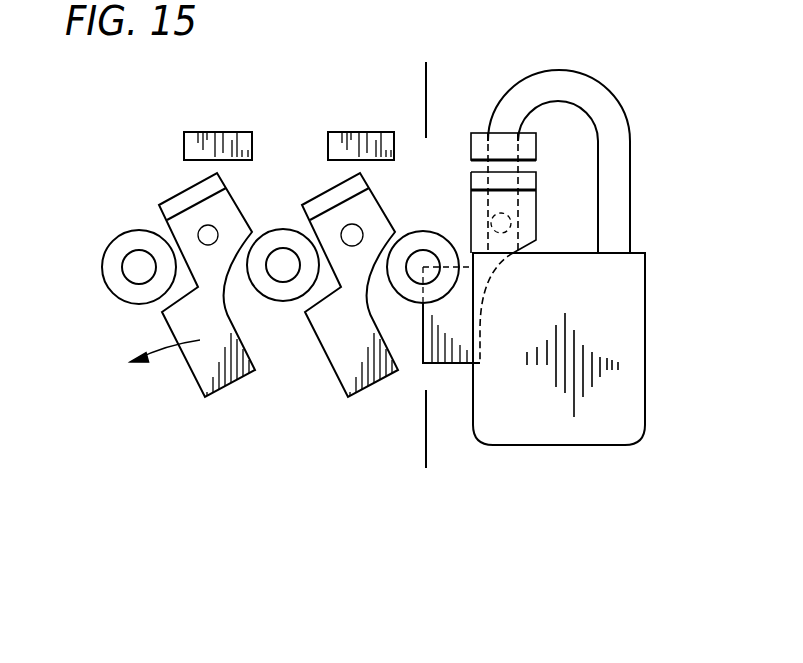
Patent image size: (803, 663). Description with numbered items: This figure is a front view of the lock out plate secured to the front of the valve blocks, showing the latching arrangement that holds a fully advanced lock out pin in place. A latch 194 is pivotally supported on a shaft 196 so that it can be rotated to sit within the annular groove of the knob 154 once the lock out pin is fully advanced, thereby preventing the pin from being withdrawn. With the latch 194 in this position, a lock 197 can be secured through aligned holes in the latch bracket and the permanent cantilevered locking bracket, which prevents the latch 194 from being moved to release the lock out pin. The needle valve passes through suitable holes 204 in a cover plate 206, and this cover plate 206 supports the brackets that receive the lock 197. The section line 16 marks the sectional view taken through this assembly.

The section line 16- 16 is at (408, 452).
The knob 154 is at (139, 267).
The latch 194 is at (202, 368).
The shaft 196 is at (210, 235).
The lock 197 is at (610, 303).
The holes 204 is at (103, 254).
The cover plate 206 is at (708, 488).